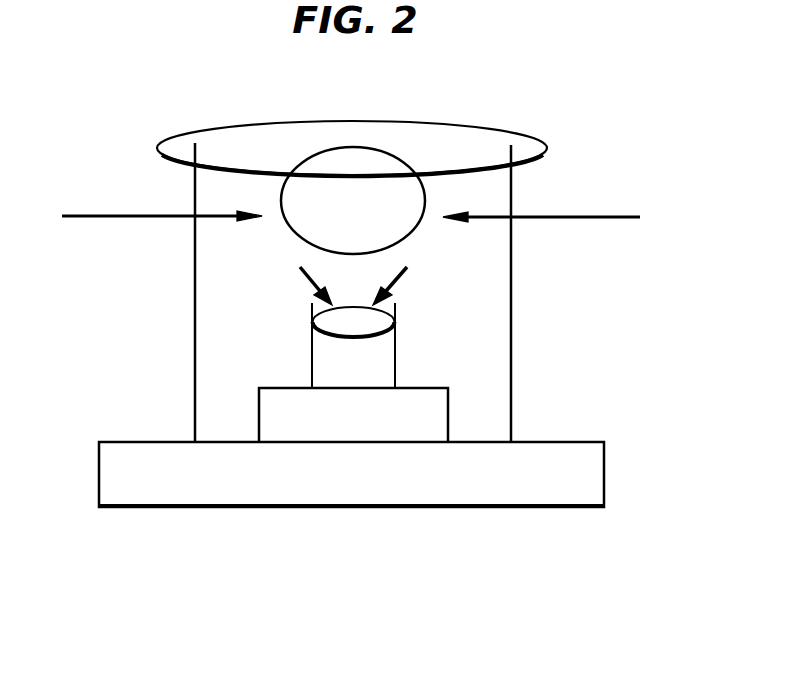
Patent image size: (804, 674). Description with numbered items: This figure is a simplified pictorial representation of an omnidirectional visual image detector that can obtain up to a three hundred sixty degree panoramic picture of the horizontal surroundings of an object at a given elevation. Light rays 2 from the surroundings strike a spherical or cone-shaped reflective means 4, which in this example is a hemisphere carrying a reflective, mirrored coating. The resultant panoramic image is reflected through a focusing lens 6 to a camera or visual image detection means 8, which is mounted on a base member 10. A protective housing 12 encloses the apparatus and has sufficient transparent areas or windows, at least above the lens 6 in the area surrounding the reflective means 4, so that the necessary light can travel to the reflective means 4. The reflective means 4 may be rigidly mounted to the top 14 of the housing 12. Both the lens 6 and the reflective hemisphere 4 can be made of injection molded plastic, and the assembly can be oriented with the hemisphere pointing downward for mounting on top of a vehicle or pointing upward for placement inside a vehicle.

The light rays 2 is at (125, 215).
The reflective means 4 is at (398, 163).
The focusing lens 6 is at (337, 338).
The visual image detection means 8 is at (448, 418).
The base member 10 is at (604, 468).
The protective housing 12 is at (511, 333).
The top of the housing 14 is at (518, 132).